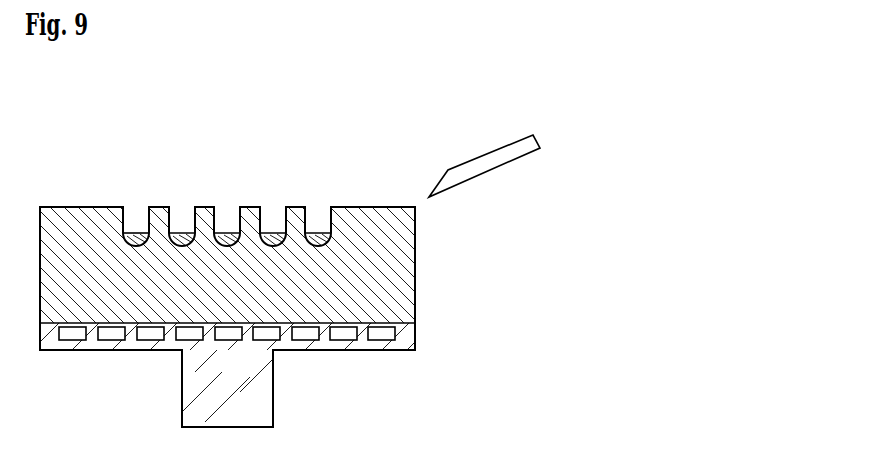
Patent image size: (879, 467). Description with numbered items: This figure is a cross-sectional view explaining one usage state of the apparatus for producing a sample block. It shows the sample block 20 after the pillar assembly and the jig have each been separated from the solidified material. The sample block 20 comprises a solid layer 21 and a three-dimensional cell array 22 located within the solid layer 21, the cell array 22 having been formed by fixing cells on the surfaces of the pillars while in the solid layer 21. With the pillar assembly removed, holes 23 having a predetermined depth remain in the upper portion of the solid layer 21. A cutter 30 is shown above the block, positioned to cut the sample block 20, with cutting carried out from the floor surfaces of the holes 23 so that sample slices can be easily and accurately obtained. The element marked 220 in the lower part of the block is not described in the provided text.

The sample block 20 is at (265, 281).
The solid layer 21 is at (388, 277).
The three-dimensional cell array 22 is at (275, 230).
The holes 23 is at (126, 213).
The cutter 30 is at (492, 152).
The electrode layer 220 is at (415, 332).